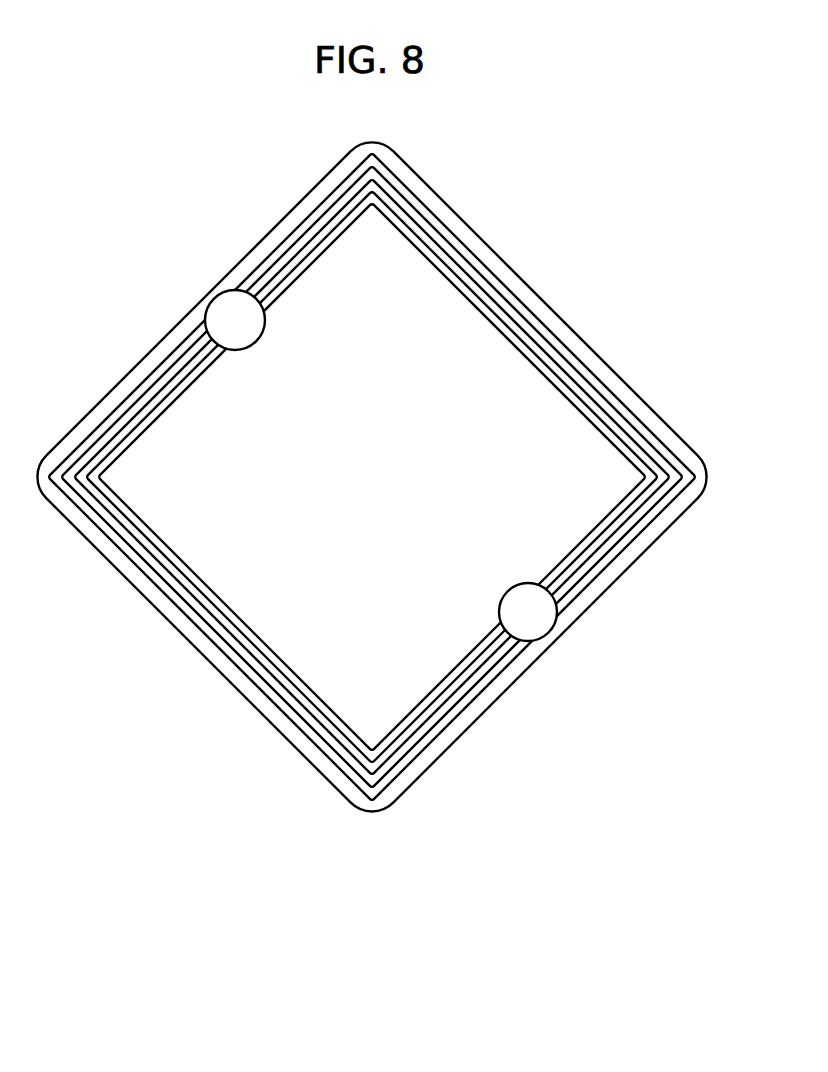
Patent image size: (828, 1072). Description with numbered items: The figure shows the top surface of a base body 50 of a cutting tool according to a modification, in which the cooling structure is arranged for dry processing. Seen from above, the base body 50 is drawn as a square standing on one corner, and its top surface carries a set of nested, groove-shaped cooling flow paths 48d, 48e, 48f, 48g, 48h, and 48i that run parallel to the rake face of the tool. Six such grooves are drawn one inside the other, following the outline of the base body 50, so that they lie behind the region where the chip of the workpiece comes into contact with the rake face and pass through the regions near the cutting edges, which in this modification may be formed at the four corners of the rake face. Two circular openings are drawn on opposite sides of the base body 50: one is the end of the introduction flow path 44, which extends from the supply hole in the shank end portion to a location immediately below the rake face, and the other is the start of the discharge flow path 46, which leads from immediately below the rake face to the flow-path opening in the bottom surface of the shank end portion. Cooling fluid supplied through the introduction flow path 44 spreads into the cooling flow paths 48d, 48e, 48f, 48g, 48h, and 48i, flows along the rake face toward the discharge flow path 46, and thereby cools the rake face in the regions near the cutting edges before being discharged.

The introduction flow path 44 is at (210, 297).
The discharge flow path 46 is at (549, 637).
The cooling flow path 48d is at (465, 252).
The cooling flow path 48e is at (508, 308).
The cooling flow path 48f is at (541, 371).
The cooling flow path 48g is at (153, 606).
The cooling flow path 48h is at (192, 611).
The cooling flow path 48i is at (228, 658).
The base body 50 is at (372, 514).